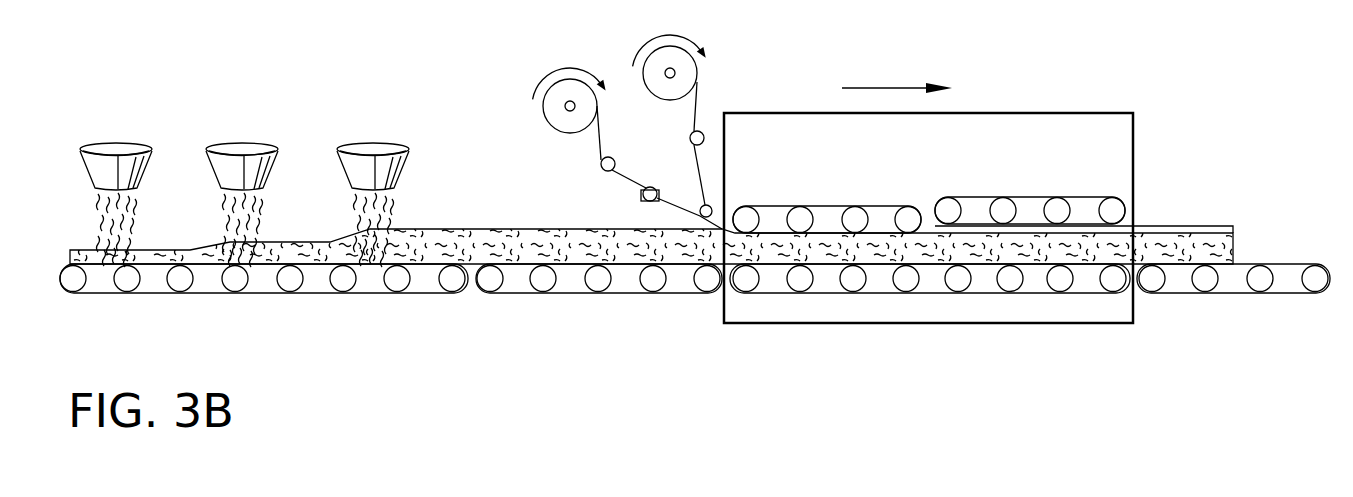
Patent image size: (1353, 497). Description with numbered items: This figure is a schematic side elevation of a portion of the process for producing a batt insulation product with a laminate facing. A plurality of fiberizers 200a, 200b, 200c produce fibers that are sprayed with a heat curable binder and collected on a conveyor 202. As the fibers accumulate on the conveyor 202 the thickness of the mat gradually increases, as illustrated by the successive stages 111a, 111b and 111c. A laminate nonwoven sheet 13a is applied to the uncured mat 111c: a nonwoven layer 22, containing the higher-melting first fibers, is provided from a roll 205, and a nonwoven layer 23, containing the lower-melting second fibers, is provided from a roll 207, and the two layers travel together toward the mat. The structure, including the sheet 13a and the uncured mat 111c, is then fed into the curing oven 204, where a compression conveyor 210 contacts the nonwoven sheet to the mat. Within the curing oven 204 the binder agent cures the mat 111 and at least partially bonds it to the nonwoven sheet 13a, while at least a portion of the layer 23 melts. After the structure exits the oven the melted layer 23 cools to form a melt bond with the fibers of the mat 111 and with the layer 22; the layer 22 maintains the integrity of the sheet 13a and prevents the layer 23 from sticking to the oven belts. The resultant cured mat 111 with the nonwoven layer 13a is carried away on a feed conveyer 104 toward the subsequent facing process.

The fiberizer 200a is at (118, 146).
The fiberizer 200b is at (244, 146).
The fiberizer 200c is at (375, 146).
The mat stage 111a is at (104, 294).
The mat stage 111b is at (254, 294).
The uncured mat 111c is at (363, 294).
The cured low density insulation mat 111 is at (1226, 250).
The conveyor 202 is at (427, 295).
The feed conveyer 104 is at (1234, 294).
The curing oven 204 is at (922, 325).
The compression conveyor 210 is at (780, 205).
The laminate nonwoven layer 13a is at (930, 206).
The roll 207 is at (551, 132).
The roll 205 is at (642, 97).
The nonwoven layer 23 is at (628, 176).
The nonwoven layer 22 is at (697, 106).